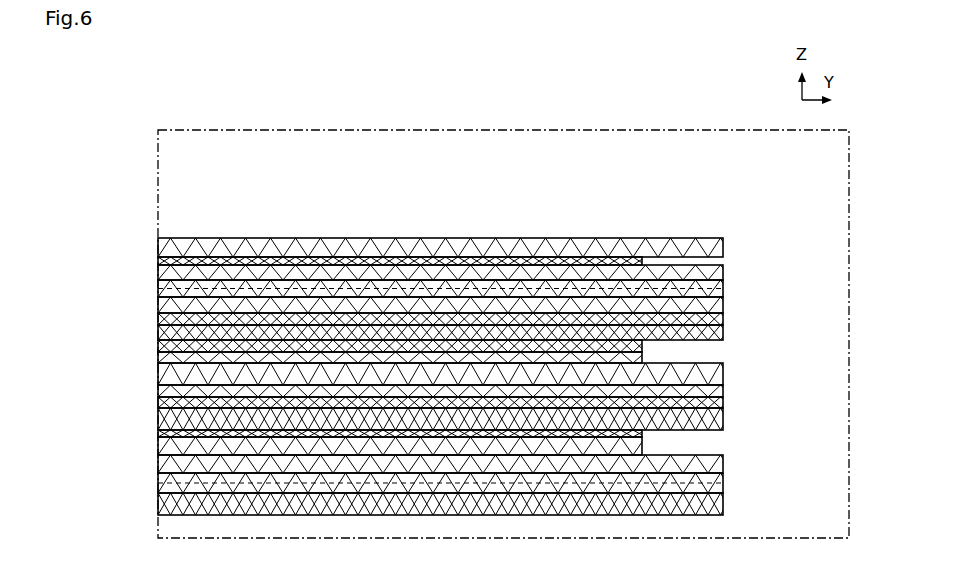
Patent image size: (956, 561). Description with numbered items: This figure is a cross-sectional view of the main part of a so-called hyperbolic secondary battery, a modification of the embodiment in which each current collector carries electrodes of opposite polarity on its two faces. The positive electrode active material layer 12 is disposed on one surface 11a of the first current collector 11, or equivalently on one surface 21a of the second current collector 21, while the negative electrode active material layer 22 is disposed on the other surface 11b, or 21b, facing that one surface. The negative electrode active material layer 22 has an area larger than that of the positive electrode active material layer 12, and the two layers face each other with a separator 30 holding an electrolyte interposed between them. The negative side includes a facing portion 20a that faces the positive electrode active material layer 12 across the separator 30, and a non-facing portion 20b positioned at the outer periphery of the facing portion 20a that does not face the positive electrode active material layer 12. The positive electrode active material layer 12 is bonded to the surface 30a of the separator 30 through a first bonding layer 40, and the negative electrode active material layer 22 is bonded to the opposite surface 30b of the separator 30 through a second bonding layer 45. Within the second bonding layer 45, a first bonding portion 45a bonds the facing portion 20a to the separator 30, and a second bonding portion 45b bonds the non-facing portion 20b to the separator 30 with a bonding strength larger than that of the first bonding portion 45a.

The first current collector 11 is at (158, 385).
The one surface of the first current collector 11a is at (723, 365).
The other surface of the first current collector 11b is at (723, 393).
The positive electrode active material layer 12 is at (158, 260).
The facing portion 20a is at (372, 240).
The non-facing portion 20b is at (693, 268).
The second current collector 21 is at (158, 286).
The one surface of the second current collector 21a is at (723, 272).
The other surface of the second current collector 21b is at (723, 303).
The negative electrode active material layer 22 is at (158, 313).
The separator 30 is at (168, 244).
The surface of the separator facing the positive electrode active material layer 30a is at (723, 320).
The surface of the separator facing the negative electrode active material layer 30b is at (723, 347).
The first bonding layer 40 is at (437, 333).
The second bonding layer 45 is at (692, 184).
The first bonding portion 45a is at (594, 310).
The second bonding portion 45b is at (667, 340).